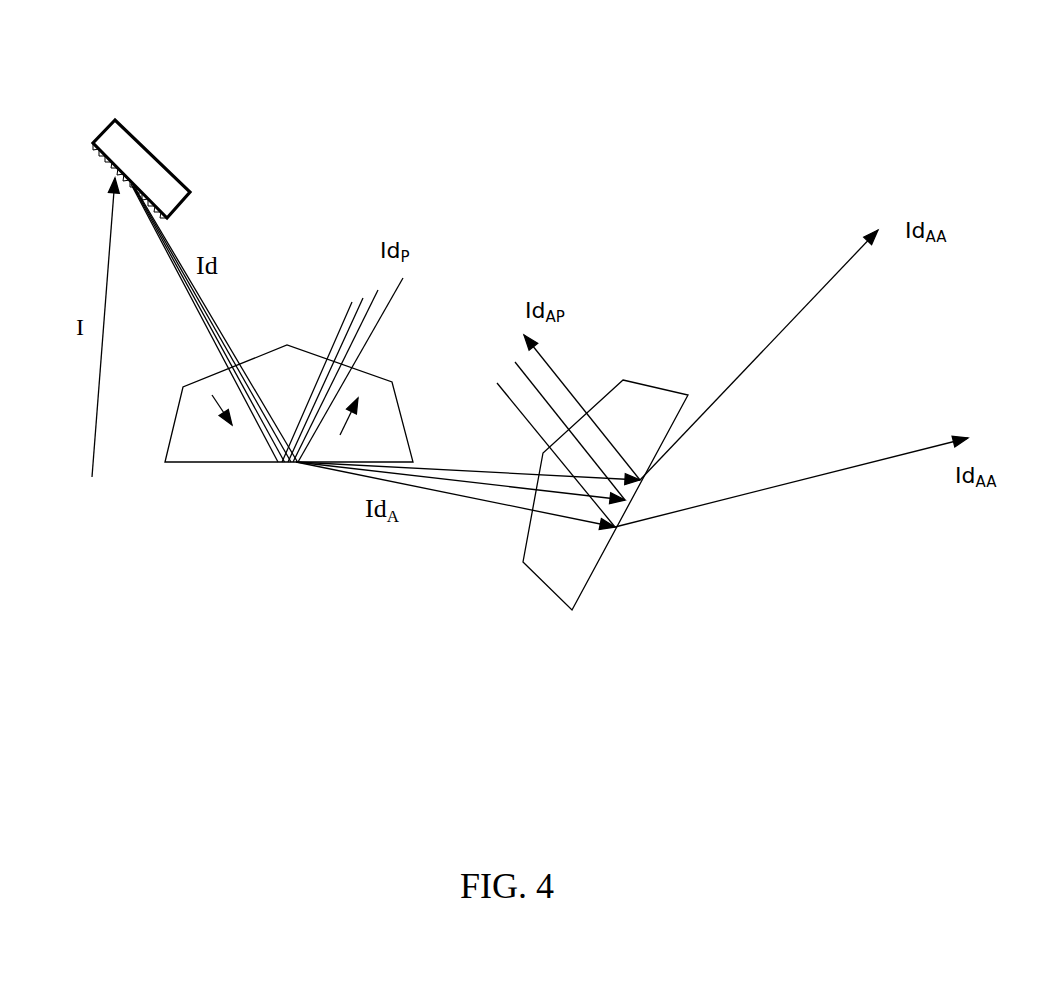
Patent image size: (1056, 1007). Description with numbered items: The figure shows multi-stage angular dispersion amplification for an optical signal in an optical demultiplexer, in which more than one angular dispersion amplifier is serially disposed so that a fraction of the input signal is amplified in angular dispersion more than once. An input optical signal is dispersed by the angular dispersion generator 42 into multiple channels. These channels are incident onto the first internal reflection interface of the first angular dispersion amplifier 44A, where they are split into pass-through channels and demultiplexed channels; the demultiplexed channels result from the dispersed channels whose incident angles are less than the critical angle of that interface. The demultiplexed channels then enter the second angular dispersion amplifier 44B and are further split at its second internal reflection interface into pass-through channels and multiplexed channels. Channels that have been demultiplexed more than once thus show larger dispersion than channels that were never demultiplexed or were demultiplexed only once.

The angular dispersion generator 42 is at (141, 150).
The first angular dispersion amplifier 44A is at (289, 425).
The second angular dispersion amplifier 44B is at (605, 500).